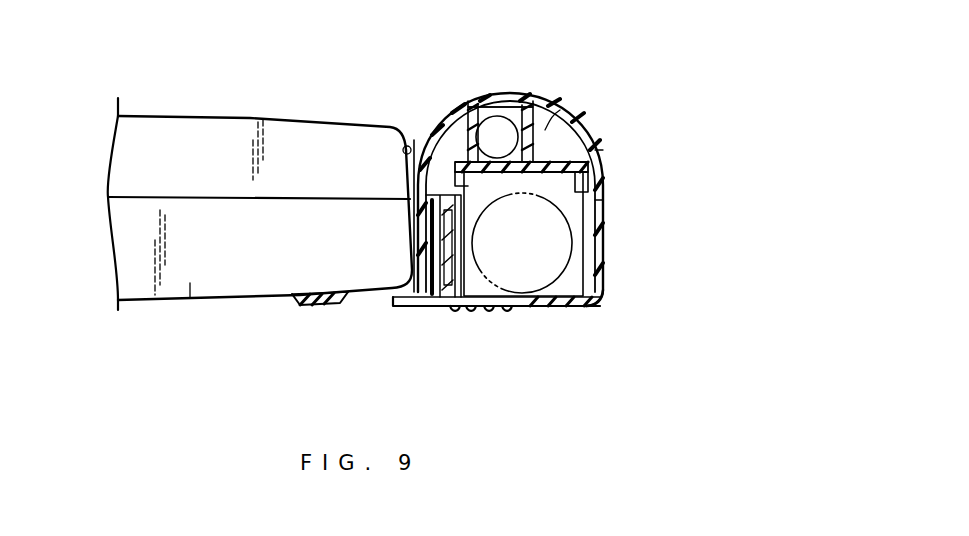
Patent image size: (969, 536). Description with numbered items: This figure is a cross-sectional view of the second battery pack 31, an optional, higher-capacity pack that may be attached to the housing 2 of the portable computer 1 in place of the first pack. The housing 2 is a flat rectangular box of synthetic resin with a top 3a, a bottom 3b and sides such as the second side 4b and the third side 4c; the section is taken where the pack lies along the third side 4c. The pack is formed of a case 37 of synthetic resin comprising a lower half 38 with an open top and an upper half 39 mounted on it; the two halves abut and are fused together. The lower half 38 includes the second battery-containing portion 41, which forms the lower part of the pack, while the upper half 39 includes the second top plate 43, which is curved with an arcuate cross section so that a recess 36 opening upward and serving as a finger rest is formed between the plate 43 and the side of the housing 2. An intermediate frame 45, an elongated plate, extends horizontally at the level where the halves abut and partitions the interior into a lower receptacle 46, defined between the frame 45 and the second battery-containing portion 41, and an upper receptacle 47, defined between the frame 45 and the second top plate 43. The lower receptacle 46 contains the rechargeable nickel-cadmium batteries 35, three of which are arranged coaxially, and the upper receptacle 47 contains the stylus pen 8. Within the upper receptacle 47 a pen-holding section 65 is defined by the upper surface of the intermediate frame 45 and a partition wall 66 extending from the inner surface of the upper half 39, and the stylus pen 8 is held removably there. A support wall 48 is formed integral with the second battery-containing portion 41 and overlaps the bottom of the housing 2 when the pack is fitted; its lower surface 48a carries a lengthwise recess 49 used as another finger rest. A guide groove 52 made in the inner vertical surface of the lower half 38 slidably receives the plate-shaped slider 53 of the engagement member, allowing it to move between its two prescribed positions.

The portable computer 1 is at (176, 113).
The housing 2 is at (188, 298).
The top 3a is at (265, 118).
The bottom 3b is at (248, 300).
The second side 4b is at (115, 225).
The third side 4c is at (403, 151).
The stylus pen 8 is at (512, 122).
The second battery pack 31 is at (558, 90).
The nickel-cadmium batteries 35 is at (596, 304).
The recess 36 is at (414, 136).
The case 37 is at (688, 128).
The lower half 38 is at (605, 226).
The upper half 39 is at (605, 150).
The second battery-containing portion 41 is at (540, 306).
The second top plate 43 is at (496, 98).
The intermediate frame 45 is at (592, 128).
The lower receptacle 46 is at (583, 270).
The upper receptacle 47 is at (562, 132).
The support wall 48 is at (333, 304).
The lower surface 48a is at (312, 306).
The recess 49 is at (392, 300).
The guide groove 52 is at (448, 306).
The slider 53 is at (410, 223).
The pen-holding section 65 is at (497, 152).
The partition wall 66 is at (456, 125).